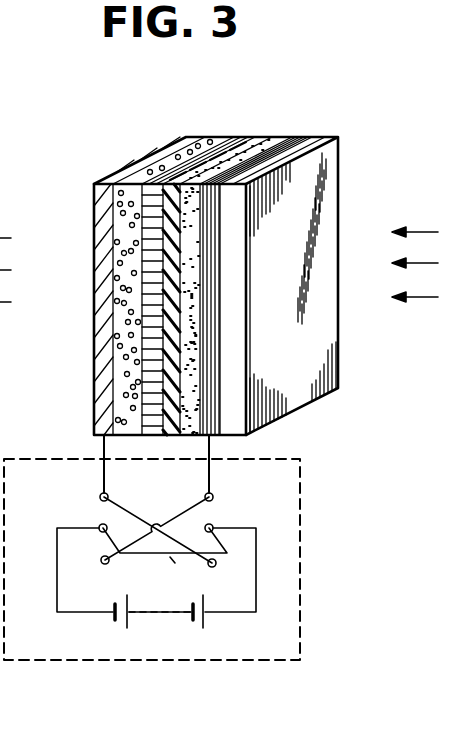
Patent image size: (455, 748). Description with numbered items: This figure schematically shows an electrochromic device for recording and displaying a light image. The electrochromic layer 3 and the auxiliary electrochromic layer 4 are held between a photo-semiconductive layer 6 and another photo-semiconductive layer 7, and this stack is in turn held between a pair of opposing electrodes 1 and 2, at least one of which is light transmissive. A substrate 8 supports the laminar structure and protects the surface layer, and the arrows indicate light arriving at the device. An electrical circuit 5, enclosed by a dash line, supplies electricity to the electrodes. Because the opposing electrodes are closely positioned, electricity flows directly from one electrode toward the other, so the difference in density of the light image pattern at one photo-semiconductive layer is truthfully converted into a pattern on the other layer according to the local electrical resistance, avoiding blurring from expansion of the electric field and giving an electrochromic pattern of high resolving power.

The electrode 1 is at (287, 138).
The electrode 2 is at (133, 164).
The electrochromic layer 3 is at (232, 142).
The auxiliary electrochromic layer 4 is at (261, 138).
The electrical circuit 5 is at (256, 572).
The photo-semiconductive layer 6 is at (198, 148).
The photo-semiconductive layer 7 is at (273, 138).
The substrate 8 is at (326, 138).